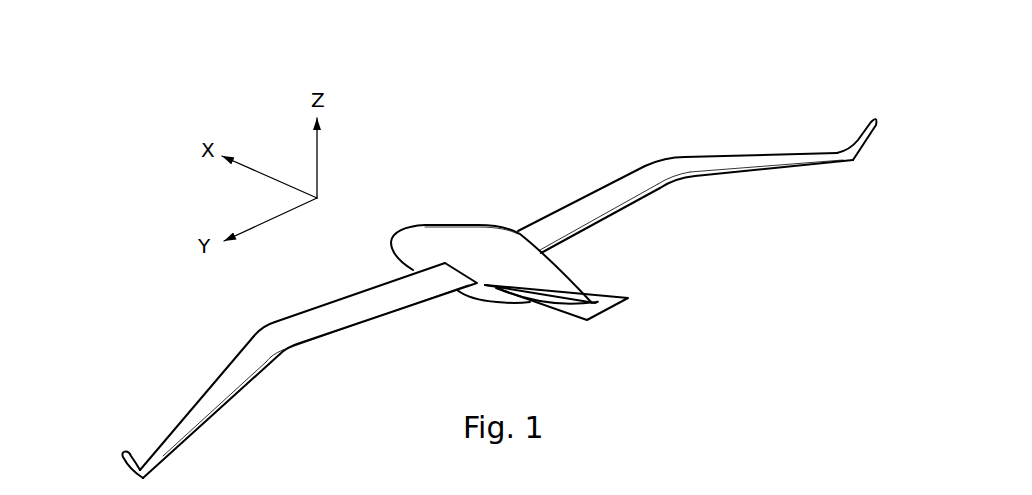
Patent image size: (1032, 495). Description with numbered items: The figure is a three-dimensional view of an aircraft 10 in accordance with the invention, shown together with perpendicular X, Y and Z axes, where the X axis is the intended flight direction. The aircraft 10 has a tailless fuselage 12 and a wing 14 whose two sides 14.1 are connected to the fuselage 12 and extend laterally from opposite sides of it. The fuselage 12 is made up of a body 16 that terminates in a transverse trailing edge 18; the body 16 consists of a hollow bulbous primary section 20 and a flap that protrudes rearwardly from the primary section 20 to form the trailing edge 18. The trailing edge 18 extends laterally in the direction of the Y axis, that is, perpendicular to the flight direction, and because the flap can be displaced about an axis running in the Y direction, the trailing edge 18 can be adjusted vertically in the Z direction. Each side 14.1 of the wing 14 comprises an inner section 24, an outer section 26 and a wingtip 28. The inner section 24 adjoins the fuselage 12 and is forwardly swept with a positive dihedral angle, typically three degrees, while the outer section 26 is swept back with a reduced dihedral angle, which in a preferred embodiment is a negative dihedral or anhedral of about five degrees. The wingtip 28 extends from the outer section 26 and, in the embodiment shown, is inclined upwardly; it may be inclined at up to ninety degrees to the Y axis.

The aircraft 10 is at (420, 123).
The fuselage 12 is at (402, 208).
The wing 14 is at (612, 148).
The side 14.1 is at (260, 313).
The body 16 is at (453, 312).
The trailing edge 18 is at (613, 315).
The primary section 20 is at (472, 210).
The inner section 24 is at (350, 280).
The outer section 26 is at (193, 378).
The wingtip 28 is at (110, 470).